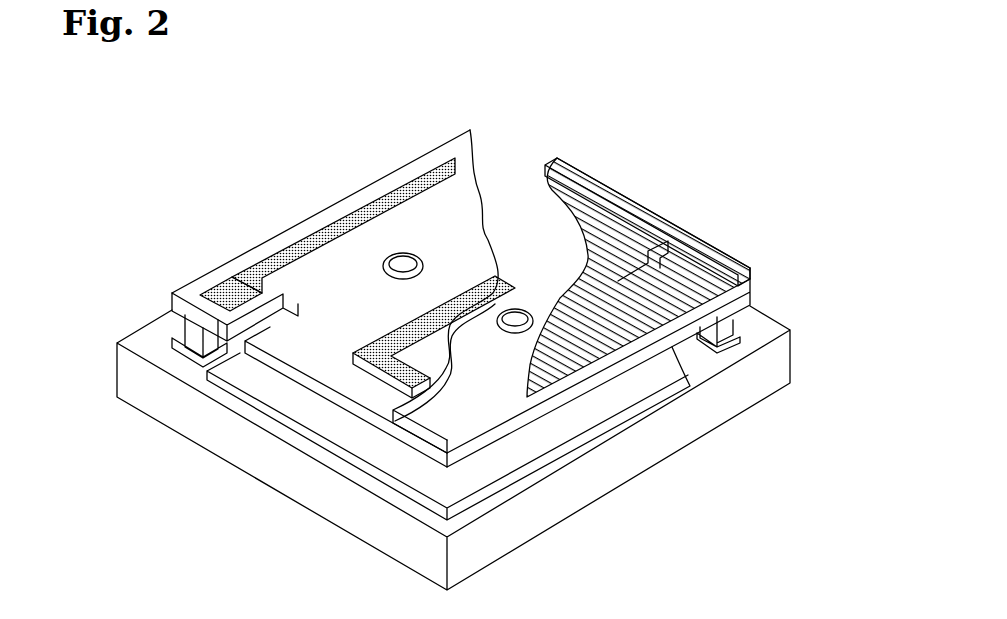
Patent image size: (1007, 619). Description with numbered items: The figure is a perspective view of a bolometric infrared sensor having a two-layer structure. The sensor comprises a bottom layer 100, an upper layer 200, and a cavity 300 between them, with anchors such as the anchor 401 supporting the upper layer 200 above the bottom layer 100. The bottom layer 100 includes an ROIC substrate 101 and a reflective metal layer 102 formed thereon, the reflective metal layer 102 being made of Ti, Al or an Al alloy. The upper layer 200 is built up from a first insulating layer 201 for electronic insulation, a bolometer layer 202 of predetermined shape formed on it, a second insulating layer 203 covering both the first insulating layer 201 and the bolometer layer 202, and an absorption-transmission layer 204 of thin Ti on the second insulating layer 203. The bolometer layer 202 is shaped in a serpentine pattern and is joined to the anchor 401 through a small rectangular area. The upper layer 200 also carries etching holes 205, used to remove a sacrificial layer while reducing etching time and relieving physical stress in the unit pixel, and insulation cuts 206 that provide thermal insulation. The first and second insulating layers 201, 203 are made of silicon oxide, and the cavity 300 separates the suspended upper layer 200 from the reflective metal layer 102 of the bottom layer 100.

The bottom layer 100 is at (805, 322).
The ROIC substrate 101 is at (663, 440).
The reflective metal layer 102 is at (423, 475).
The upper layer 200 is at (760, 268).
The first insulating layer 201 is at (317, 218).
The bolometer layer 202 is at (393, 163).
The second insulating layer 203 is at (508, 145).
The absorption-transmission layer 204 is at (720, 236).
The etching holes 205 is at (517, 331).
The insulation cuts 206 is at (273, 237).
The cavity 300 is at (801, 318).
The anchor 401 is at (172, 336).